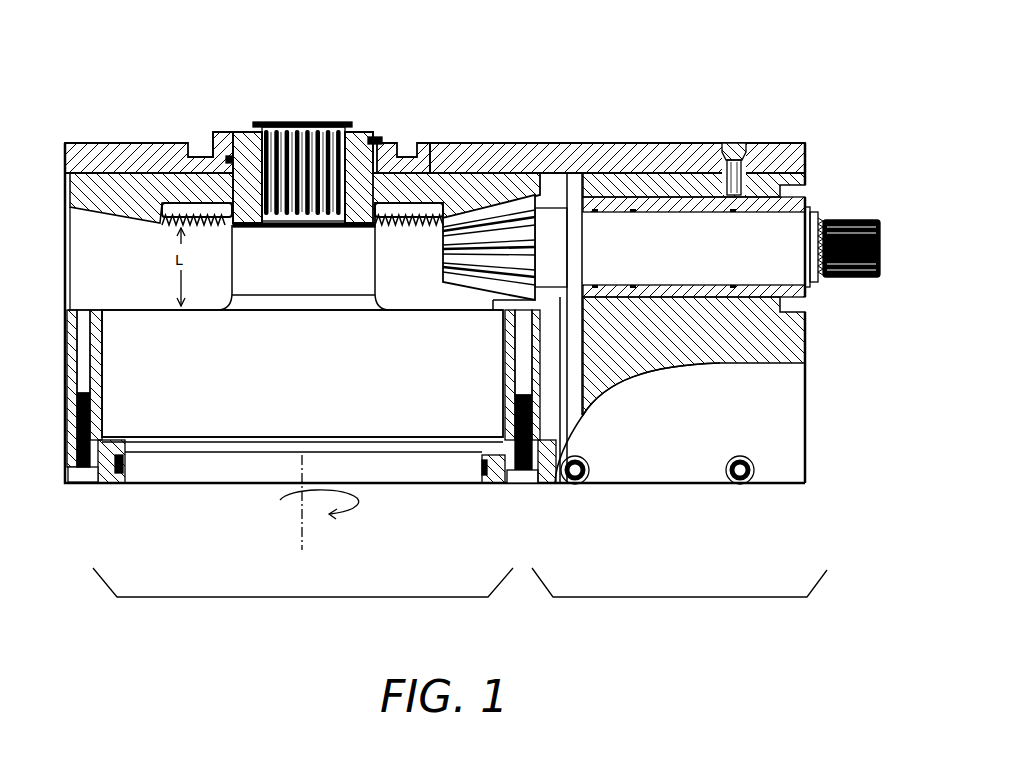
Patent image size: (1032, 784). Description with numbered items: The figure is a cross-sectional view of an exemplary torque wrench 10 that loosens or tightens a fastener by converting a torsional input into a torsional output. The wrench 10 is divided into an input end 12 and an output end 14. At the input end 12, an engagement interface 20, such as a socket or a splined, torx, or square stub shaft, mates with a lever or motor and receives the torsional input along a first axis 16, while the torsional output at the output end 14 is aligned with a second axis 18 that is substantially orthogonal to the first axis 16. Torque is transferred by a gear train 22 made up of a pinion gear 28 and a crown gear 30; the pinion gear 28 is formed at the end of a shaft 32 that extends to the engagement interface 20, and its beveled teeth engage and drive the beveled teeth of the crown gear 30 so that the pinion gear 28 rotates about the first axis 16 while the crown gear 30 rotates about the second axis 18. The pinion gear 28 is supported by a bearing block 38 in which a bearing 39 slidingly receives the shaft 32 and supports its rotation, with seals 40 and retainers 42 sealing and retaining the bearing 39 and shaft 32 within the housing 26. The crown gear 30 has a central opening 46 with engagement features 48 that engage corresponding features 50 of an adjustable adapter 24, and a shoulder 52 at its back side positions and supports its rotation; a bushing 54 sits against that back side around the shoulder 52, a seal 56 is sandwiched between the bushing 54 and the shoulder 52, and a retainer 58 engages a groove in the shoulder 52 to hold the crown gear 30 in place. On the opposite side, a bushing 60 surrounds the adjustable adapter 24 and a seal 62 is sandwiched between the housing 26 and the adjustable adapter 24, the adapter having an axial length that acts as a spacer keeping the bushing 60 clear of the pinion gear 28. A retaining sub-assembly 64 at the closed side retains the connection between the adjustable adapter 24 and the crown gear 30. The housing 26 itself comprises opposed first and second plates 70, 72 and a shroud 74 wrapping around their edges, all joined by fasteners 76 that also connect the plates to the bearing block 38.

The torque wrench 10 is at (702, 63).
The input end 12 is at (688, 597).
The output end 14 is at (303, 597).
The first axis 16 is at (880, 247).
The second axis 18 is at (302, 548).
The engagement interface 20 is at (840, 283).
The gear train 22 is at (432, 251).
The adjustable adapter 24 is at (316, 372).
The housing 26 is at (537, 492).
The pinion gear 28 is at (473, 265).
The crown gear 30 is at (486, 201).
The shaft 32 is at (562, 257).
The bearing block 38 is at (785, 165).
The bearing 39 is at (800, 190).
The seals 40 is at (790, 213).
The retainers 42 is at (808, 292).
The central opening 46 is at (245, 130).
The engagement features 48 is at (247, 177).
The corresponding features 50 is at (355, 160).
The shoulder 52 is at (379, 168).
The bushing 54 is at (405, 157).
The seal 56 is at (420, 168).
The retainer 58 is at (213, 140).
The bushing 60 is at (68, 374).
The seal 62 is at (123, 470).
The retaining sub-assembly 64 is at (297, 105).
The first plate 70 is at (117, 160).
The second plate 72 is at (65, 442).
The shroud 74 is at (782, 433).
The fasteners 76 is at (715, 474).